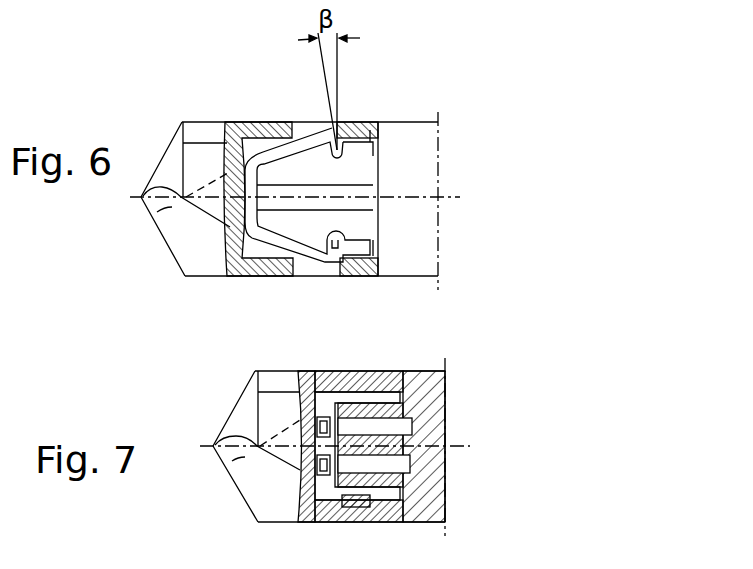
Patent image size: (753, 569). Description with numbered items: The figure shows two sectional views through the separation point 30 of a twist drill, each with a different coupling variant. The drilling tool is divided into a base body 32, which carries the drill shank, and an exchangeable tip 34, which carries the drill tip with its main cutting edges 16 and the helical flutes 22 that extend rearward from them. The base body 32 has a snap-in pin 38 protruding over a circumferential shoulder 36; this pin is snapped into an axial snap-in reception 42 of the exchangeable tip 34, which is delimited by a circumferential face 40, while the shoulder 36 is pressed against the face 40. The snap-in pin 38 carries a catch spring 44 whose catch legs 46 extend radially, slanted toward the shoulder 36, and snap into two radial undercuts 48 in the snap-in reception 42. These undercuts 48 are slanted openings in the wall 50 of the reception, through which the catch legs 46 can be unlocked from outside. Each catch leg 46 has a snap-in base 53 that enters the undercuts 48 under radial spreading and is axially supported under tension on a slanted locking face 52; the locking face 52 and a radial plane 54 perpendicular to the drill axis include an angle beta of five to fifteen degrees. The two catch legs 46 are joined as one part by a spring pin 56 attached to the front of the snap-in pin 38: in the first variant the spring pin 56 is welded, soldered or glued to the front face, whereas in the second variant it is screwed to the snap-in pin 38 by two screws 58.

In FIG. 6, the main cutting edges 16 is at (160, 240).
In FIG. 6, the helical flutes 22 is at (207, 247).
In FIG. 6, the separation point 30 is at (380, 162).
In FIG. 7, the separation point 30 is at (403, 518).
In FIG. 6, the base body 32 is at (417, 177).
In FIG. 7, the base body 32 is at (437, 390).
In FIG. 6, the exchangeable tip 34 is at (207, 152).
In FIG. 7, the exchangeable tip 34 is at (275, 415).
In FIG. 6, the circumferential shoulder 36 is at (368, 265).
In FIG. 7, the circumferential shoulder 36 is at (395, 512).
In FIG. 6, the snap-in pin 38 is at (265, 268).
In FIG. 7, the snap-in pin 38 is at (395, 380).
In FIG. 6, the circumferential face 40 is at (395, 122).
In FIG. 7, the circumferential face 40 is at (447, 373).
In FIG. 6, the snap-in reception 42 is at (233, 277).
In FIG. 6, the catch spring 44 is at (256, 148).
In FIG. 7, the catch spring 44 is at (342, 380).
In FIG. 6, the catch legs 46 is at (308, 135).
In FIG. 7, the catch legs 46 is at (360, 387).
In FIG. 6, the radial undercuts 48 is at (323, 265).
In FIG. 7, the radial undercuts 48 is at (345, 510).
In FIG. 6, the wall 50 is at (362, 125).
In FIG. 7, the wall 50 is at (377, 383).
In FIG. 6, the locking face 52 is at (316, 52).
In FIG. 6, the snap-in base 53 is at (347, 165).
In FIG. 6, the radial plane 54 is at (340, 60).
In FIG. 6, the spring pin 56 is at (230, 135).
In FIG. 7, the spring pin 56 is at (305, 385).
In FIG. 7, the screws 58 is at (410, 467).